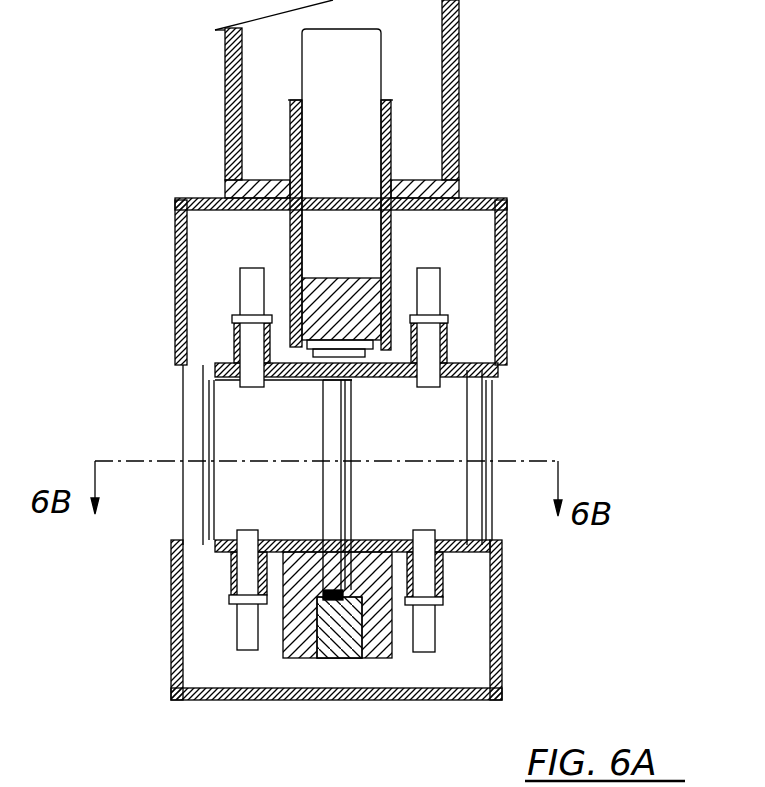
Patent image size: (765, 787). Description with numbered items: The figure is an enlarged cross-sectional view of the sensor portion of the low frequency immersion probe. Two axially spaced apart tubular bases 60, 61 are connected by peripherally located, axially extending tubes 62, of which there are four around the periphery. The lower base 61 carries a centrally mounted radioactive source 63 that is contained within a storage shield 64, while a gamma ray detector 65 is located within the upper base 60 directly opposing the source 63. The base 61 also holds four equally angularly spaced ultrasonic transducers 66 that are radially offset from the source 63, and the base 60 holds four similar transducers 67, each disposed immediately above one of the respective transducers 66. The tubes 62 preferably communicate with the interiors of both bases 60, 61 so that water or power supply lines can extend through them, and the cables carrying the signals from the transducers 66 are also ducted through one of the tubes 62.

The tubular base 60 is at (508, 250).
The tubular base 61 is at (483, 667).
The tube 62 is at (190, 402).
The radioactive source 63 is at (322, 598).
The storage shield 64 is at (300, 640).
The gamma ray detector 65 is at (362, 306).
The ultrasonic transducer 66 is at (235, 568).
The ultrasonic transducer 67 is at (250, 288).